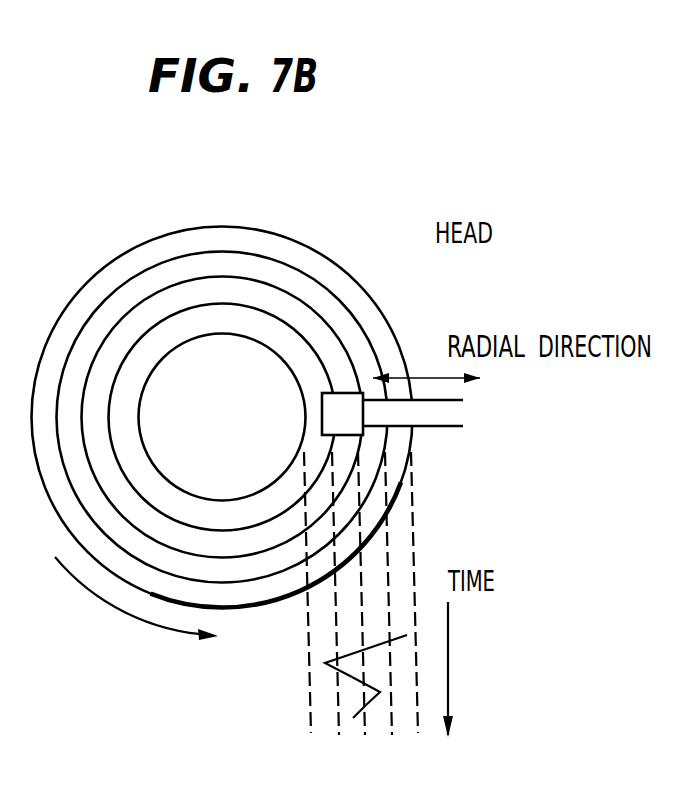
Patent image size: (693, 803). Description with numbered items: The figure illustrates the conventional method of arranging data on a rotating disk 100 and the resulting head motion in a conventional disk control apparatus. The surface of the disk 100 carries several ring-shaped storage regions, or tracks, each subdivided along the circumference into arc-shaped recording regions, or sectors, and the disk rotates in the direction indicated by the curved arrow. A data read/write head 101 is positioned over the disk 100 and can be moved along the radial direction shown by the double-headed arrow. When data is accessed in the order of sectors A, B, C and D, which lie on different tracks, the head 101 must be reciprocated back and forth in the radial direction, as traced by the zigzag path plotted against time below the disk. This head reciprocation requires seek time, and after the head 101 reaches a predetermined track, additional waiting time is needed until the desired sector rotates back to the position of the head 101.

The rotating disk 100 is at (210, 348).
The data read/write head 101 is at (343, 393).
The sector A is at (387, 628).
The sector B is at (339, 654).
The sector C is at (375, 691).
The sector D is at (355, 725).